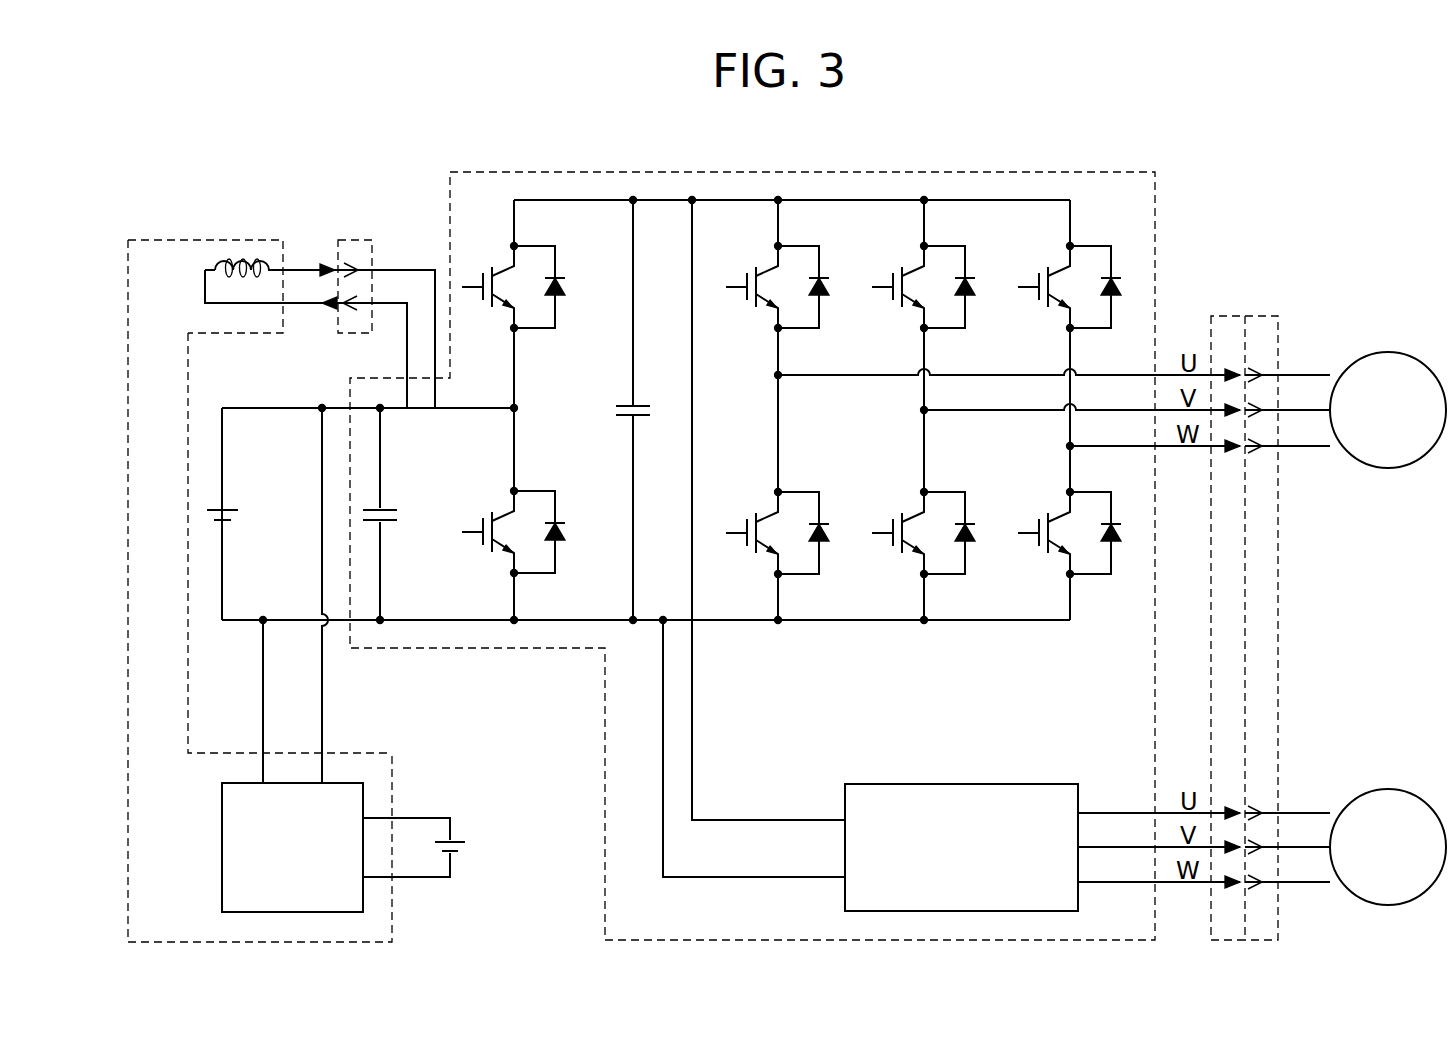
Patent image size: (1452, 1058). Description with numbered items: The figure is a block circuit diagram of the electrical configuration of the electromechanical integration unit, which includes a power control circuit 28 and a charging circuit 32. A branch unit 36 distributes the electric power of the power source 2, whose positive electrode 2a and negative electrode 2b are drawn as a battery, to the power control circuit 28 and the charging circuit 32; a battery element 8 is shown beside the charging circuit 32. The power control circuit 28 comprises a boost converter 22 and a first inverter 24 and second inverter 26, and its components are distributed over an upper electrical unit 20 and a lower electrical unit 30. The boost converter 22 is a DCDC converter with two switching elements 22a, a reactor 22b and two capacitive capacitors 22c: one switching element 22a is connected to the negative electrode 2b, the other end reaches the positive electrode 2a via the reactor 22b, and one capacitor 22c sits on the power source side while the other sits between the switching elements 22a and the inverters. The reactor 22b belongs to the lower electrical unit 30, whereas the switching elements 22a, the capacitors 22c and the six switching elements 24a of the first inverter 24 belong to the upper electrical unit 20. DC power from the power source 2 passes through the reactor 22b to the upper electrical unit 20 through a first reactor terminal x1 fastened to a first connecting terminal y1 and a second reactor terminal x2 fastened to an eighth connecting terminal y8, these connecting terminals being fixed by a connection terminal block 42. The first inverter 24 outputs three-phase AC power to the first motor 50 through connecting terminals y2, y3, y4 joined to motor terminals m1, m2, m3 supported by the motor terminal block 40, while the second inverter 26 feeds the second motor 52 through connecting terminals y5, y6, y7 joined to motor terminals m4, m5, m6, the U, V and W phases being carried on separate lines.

The power source 2 is at (360, 594).
The positive electrode 2a is at (232, 508).
The negative electrode 2b is at (235, 524).
The auxiliary battery 8 is at (458, 842).
The upper electrical unit 20 is at (862, 172).
The boost converter 22 is at (672, 188).
The switching element 22a is at (505, 268).
The reactor 22b is at (237, 262).
The capacitive capacitor 22c is at (385, 512).
The first inverter 24 is at (1097, 192).
The switching element 24a is at (768, 268).
The second inverter 26 is at (1037, 784).
The power control circuit 28 is at (180, 205).
The lower electrical unit 30 is at (150, 240).
The charging circuit 32 is at (222, 848).
The branch unit 36 is at (242, 408).
The motor terminal block 40 is at (1262, 316).
The connection terminal block 42 is at (350, 240).
The first motor 50 is at (1410, 362).
The second motor 52 is at (1410, 800).
The first reactor terminal x1 is at (330, 262).
The second reactor terminal x2 is at (326, 300).
The first connection terminal y1 is at (352, 266).
The second connection terminal y2 is at (1232, 368).
The third connection terminal y3 is at (1238, 404).
The fourth connection terminal y4 is at (1235, 452).
The fifth connection terminal y5 is at (1235, 840).
The sixth connection terminal y6 is at (1232, 806).
The seventh connection terminal y7 is at (1235, 888).
The eighth connection terminal y8 is at (352, 298).
The first motor terminal m1 is at (1253, 407).
The second motor terminal m2 is at (1253, 372).
The third motor terminal m3 is at (1256, 450).
The fourth motor terminal m4 is at (1253, 845).
The fifth motor terminal m5 is at (1253, 810).
The sixth motor terminal m6 is at (1256, 886).